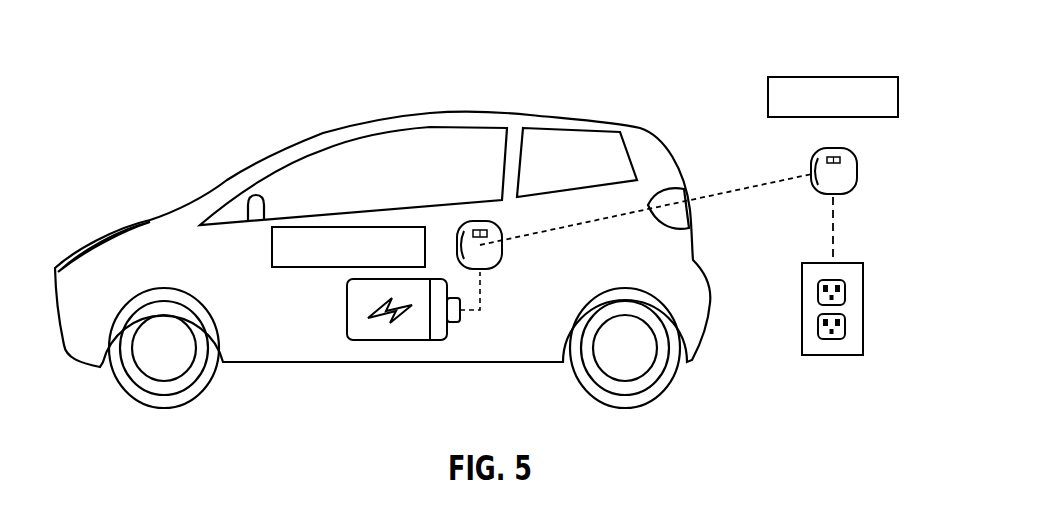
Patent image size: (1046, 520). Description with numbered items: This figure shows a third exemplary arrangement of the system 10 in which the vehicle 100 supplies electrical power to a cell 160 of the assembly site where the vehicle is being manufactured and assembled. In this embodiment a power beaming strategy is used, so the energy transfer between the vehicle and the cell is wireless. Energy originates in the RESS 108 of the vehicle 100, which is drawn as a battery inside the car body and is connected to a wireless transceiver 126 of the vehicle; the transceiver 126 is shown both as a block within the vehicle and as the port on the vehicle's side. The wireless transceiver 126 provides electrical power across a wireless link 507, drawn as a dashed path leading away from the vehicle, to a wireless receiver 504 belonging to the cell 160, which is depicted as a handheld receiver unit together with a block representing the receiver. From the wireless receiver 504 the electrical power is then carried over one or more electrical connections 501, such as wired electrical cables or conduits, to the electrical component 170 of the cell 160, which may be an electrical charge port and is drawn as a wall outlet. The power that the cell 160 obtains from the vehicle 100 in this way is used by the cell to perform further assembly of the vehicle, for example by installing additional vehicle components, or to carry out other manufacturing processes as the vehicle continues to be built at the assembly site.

The system 10 is at (122, 70).
The vehicle 100 is at (222, 181).
The wireless transceiver 126 is at (333, 225).
The RESS 108 is at (397, 341).
The charging cable 507 is at (712, 195).
The wireless receiver 504 is at (833, 77).
The electrical connections 501 is at (833, 235).
The electrical component 170 is at (865, 307).
The cell 160 is at (777, 369).